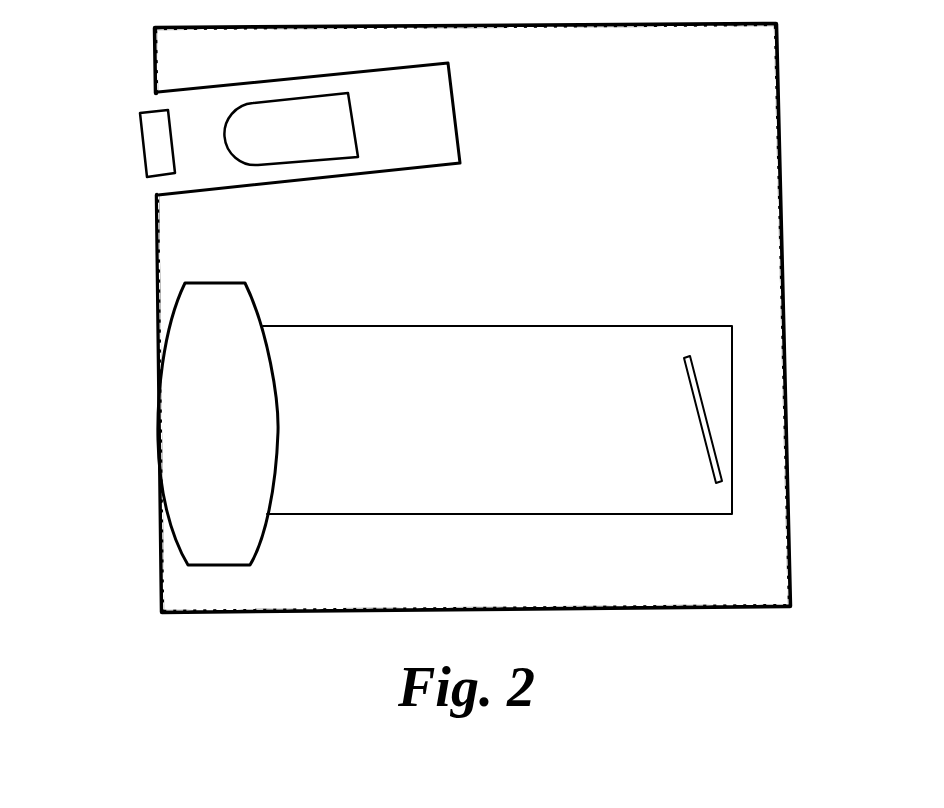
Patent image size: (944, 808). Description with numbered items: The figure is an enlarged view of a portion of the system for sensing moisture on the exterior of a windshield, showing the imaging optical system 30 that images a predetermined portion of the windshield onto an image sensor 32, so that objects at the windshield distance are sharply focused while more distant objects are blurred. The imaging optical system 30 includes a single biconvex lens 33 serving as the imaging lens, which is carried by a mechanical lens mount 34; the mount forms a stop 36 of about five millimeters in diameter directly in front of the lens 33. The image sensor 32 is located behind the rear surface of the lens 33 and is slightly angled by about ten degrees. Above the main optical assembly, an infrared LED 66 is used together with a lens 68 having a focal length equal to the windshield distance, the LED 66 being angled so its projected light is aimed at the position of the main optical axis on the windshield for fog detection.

The imaging optical system 30 is at (84, 478).
The image sensor 32 is at (707, 458).
The biconvex lens 33 is at (182, 540).
The mechanical lens mount 34 is at (713, 177).
The stop 36 is at (150, 464).
The infrared LED 66 is at (292, 162).
The lens 68 is at (140, 152).